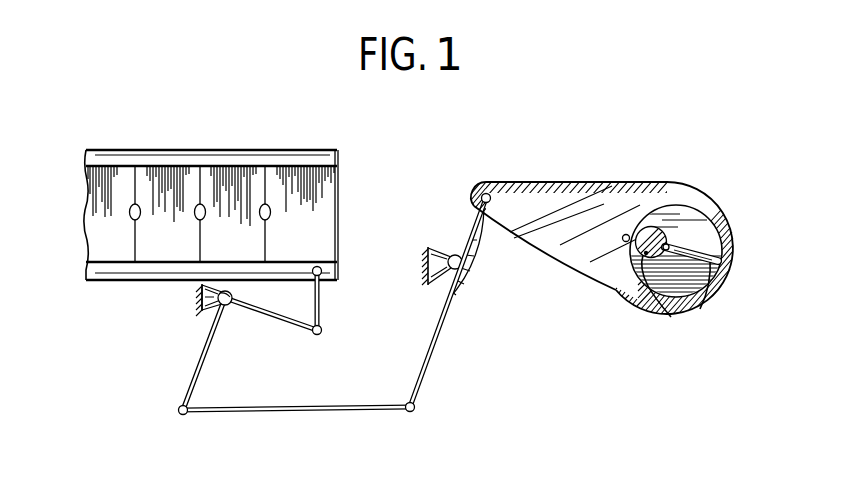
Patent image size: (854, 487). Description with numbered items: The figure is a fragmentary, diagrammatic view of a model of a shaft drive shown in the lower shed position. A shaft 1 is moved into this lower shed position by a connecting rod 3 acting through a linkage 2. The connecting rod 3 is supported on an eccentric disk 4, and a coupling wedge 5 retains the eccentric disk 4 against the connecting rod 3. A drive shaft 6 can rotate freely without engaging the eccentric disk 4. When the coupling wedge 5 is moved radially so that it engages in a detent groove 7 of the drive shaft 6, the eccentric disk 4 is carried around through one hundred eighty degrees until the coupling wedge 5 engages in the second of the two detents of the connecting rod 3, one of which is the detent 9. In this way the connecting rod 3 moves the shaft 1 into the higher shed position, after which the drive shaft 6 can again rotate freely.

The shaft 1 is at (331, 152).
The linkage 2 is at (424, 369).
The connecting rod 3 is at (539, 226).
The eccentric disk 4 is at (670, 304).
The coupling wedge 5 is at (708, 306).
The drive shaft 6 is at (627, 292).
The detent groove 7 is at (665, 240).
The detent 9 is at (624, 242).